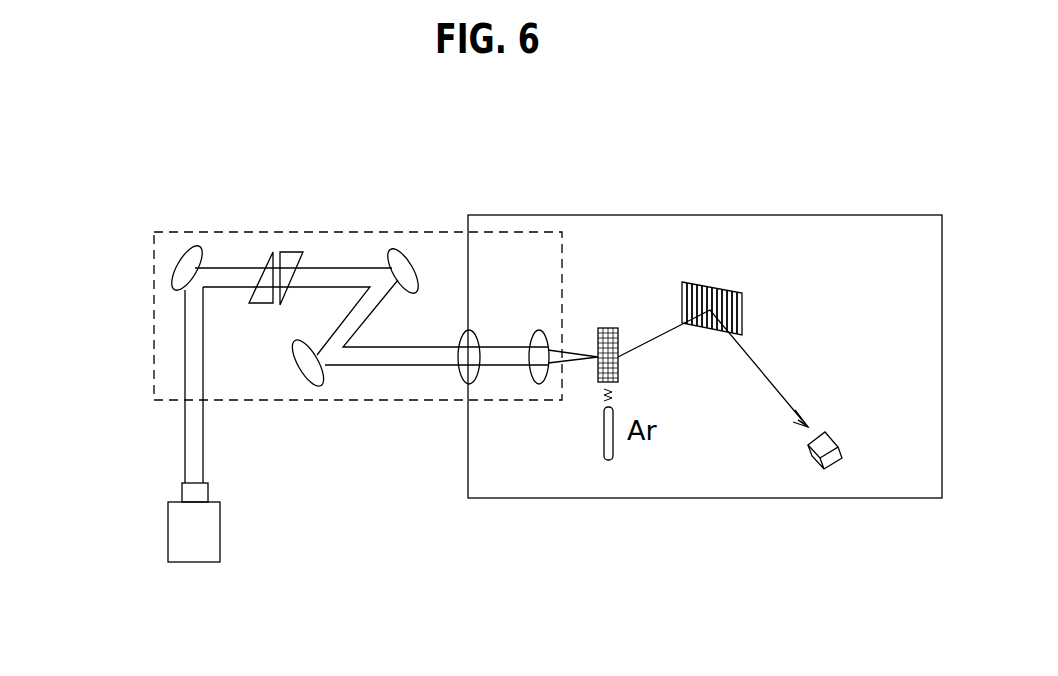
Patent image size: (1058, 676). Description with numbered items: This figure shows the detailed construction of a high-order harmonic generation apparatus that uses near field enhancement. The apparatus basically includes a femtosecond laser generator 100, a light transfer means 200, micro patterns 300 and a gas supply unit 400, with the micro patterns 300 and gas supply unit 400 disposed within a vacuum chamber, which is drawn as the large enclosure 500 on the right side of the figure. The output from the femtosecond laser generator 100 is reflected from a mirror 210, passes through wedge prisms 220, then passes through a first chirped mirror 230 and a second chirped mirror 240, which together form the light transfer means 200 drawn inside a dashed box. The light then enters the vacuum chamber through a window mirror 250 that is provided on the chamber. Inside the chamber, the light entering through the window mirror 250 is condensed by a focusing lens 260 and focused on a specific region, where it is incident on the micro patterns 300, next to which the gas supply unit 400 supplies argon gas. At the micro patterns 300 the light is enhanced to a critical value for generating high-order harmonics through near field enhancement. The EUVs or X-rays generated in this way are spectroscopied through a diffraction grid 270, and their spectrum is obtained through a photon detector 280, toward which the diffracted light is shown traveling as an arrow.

The femtosecond laser generator 100 is at (193, 553).
The light transfer means 200 is at (156, 292).
The mirror 210 is at (193, 258).
The wedge prisms 220 is at (271, 257).
The first chirped mirror 230 is at (400, 252).
The second chirped mirror 240 is at (312, 380).
The window mirror 250 is at (467, 372).
The focusing lens 260 is at (538, 378).
The diffraction grid 270 is at (710, 290).
The photon detector 280 is at (825, 452).
The micro patterns 300 is at (605, 340).
The gas supply unit 400 is at (608, 462).
The chamber 500 is at (805, 215).